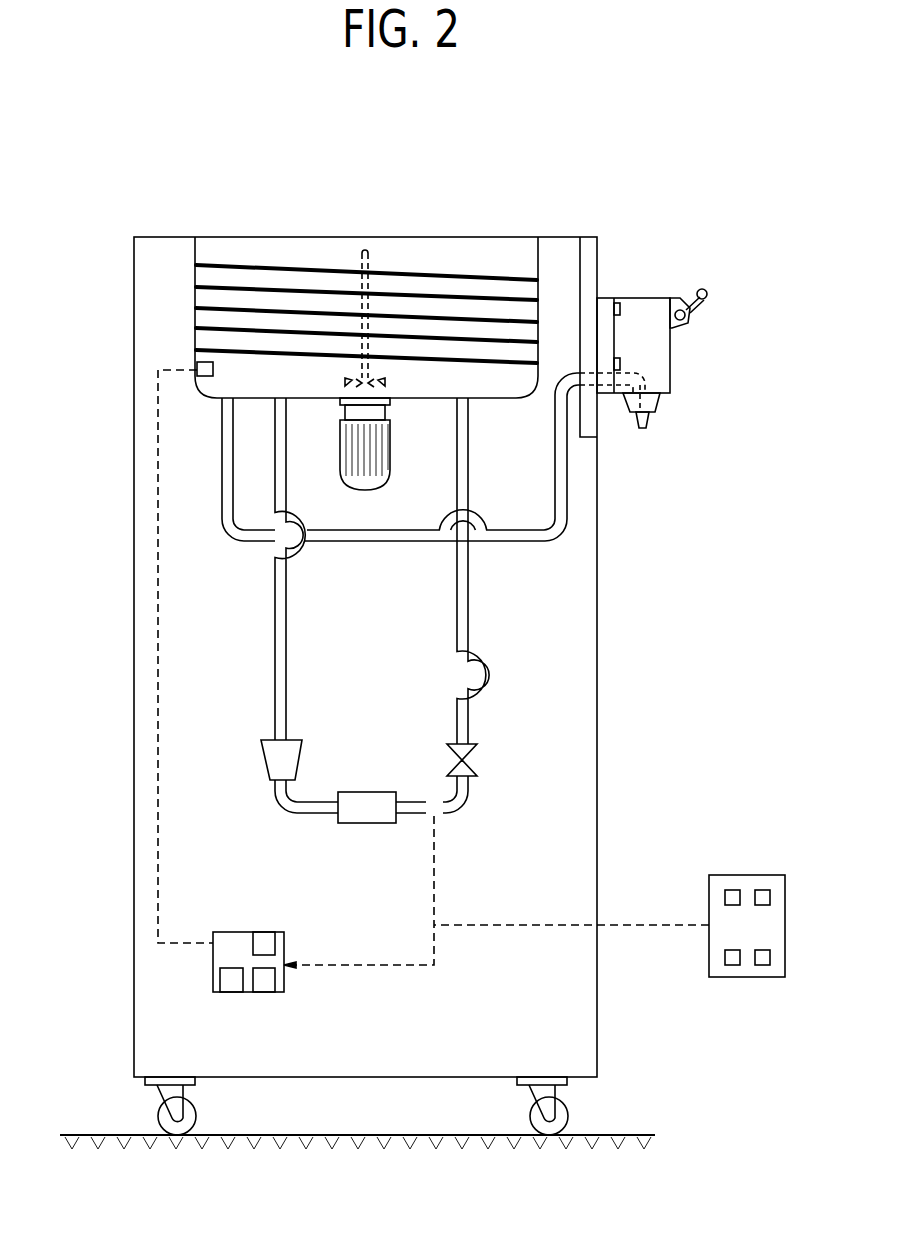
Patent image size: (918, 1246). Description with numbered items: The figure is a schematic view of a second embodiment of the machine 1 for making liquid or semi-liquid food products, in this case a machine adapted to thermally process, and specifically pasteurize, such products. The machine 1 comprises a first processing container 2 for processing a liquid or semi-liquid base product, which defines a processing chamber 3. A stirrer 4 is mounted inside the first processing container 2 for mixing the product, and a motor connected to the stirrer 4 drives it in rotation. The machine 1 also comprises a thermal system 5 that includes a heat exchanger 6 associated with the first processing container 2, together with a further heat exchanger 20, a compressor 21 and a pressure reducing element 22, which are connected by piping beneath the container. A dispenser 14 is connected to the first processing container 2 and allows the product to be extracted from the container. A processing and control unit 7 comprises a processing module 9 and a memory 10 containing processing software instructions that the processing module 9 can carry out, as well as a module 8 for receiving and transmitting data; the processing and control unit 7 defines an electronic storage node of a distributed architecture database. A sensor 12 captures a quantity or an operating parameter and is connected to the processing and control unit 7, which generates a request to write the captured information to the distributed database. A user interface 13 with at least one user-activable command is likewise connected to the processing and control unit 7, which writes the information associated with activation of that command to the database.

The machine 1 is at (644, 186).
The first processing container 2 is at (433, 222).
The processing chamber 3 is at (243, 228).
The stirrer 4 is at (340, 375).
The thermal system 5 is at (266, 655).
The heat exchanger 6 is at (213, 245).
The processing and control unit 7 is at (228, 947).
The module for receiving and transmitting data 8 is at (270, 930).
The processing module 9 is at (265, 998).
The memory 10 is at (230, 996).
The sensor 12 is at (196, 362).
The user interface 13 is at (735, 870).
The dispenser 14 is at (688, 363).
The further heat exchanger 20 is at (368, 790).
The compressor 21 is at (258, 763).
The pressure reducing element 22 is at (490, 757).